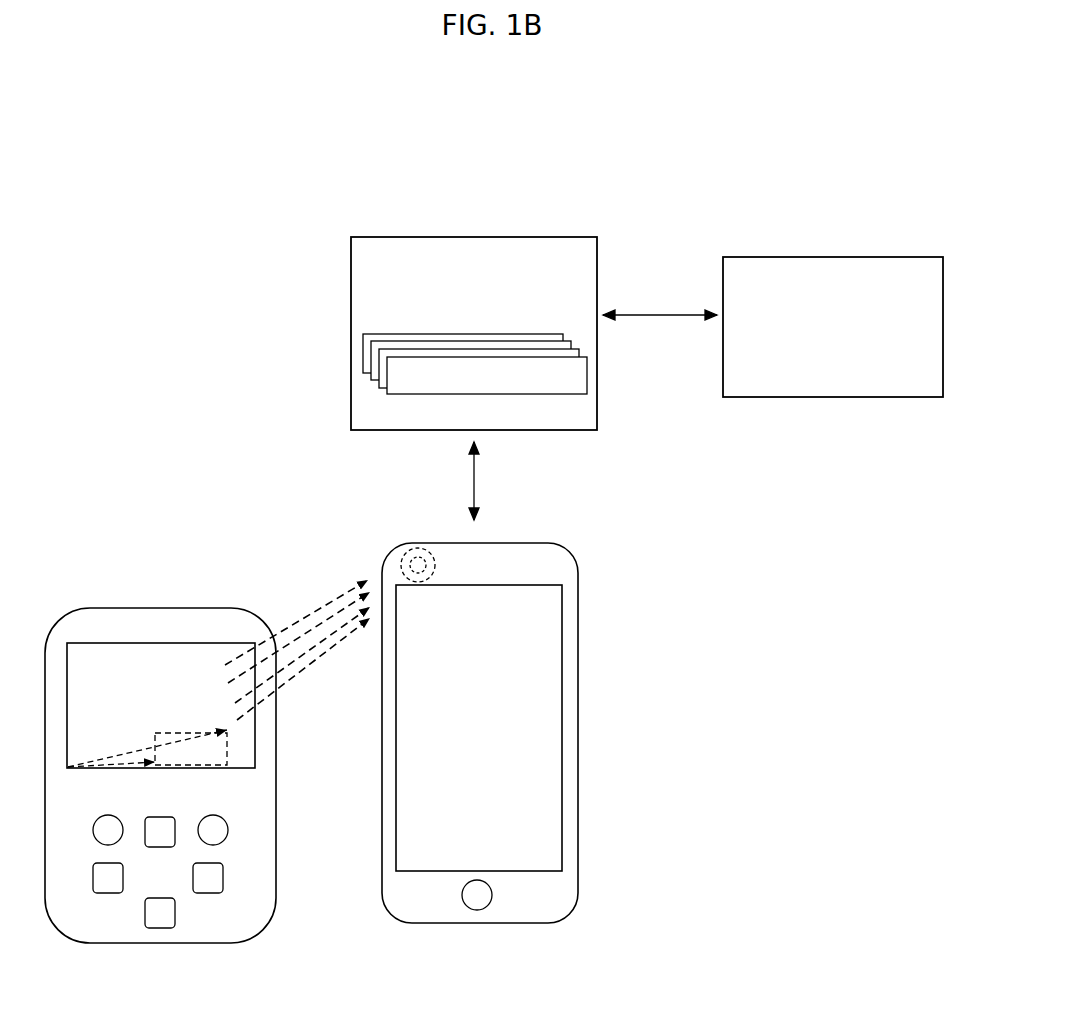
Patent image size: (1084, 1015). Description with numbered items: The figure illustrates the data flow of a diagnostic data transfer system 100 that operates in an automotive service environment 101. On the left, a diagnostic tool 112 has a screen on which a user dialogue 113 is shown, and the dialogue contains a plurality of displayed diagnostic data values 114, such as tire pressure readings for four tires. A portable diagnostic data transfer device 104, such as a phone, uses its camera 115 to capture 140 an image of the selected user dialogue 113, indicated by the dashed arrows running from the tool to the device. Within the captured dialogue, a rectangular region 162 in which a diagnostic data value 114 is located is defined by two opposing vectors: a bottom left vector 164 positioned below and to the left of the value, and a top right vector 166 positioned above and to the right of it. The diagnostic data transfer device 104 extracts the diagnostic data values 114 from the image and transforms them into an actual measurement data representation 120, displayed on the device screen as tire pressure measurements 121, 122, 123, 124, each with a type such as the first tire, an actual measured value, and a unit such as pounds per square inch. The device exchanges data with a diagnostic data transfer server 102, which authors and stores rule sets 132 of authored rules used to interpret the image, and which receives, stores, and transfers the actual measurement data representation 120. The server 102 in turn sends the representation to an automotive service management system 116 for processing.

The diagnostic data transfer system 100 is at (130, 205).
The automotive service provider environment 101 is at (787, 200).
The diagnostic data transfer server 102 is at (598, 278).
The rule set 132 is at (587, 378).
The service management system 116 is at (883, 257).
The diagnostic data transfer device 104 is at (528, 532).
The camera 115 is at (415, 548).
The actual measurement data representation 120 is at (462, 625).
The tire pressure measurement 121 is at (542, 660).
The tire pressure measurement 122 is at (542, 702).
The tire pressure measurement 123 is at (542, 740).
The tire pressure measurement 124 is at (542, 781).
The diagnostic tool 112 is at (140, 607).
The diagnostic data values 114 is at (102, 640).
The user dialogue 113 is at (253, 720).
The capture 140 is at (332, 590).
The rectangular region 162 is at (185, 768).
The bottom left vector 164 is at (155, 768).
The vector 166 is at (262, 727).